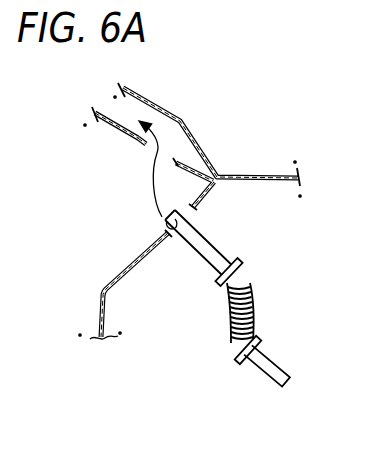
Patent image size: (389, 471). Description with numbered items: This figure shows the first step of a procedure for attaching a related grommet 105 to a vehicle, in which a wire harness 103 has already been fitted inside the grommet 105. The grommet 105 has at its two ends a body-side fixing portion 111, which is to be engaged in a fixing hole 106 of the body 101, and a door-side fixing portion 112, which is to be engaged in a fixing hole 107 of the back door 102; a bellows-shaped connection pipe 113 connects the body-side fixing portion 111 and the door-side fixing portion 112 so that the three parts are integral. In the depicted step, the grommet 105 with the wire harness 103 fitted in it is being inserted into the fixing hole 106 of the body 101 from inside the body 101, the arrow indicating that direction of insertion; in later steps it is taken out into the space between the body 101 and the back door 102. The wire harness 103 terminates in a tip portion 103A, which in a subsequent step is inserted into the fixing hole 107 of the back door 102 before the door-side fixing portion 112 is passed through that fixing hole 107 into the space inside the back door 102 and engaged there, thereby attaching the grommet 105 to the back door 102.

The body 101 is at (122, 275).
The back door 102 is at (117, 131).
The wire harness 103 is at (265, 375).
The tip portion 103A is at (204, 237).
The grommet 105 is at (253, 307).
The fixing hole 106 is at (183, 232).
The fixing hole 107 is at (147, 147).
The body-side fixing portion 111 is at (229, 365).
The door-side fixing portion 112 is at (211, 294).
The bellows-shaped connection pipe 113 is at (250, 278).